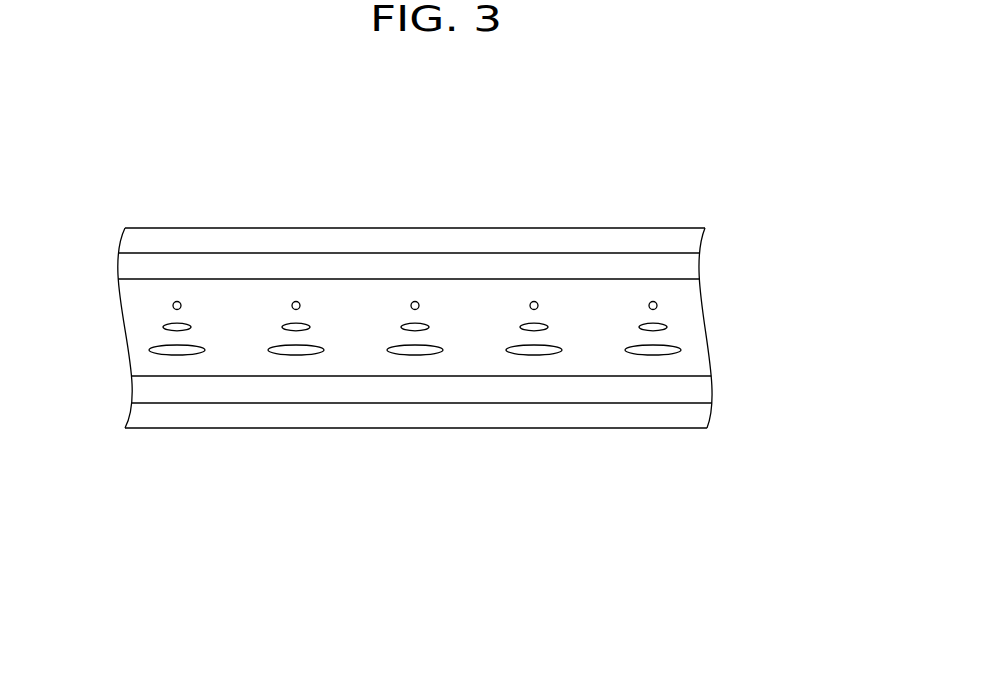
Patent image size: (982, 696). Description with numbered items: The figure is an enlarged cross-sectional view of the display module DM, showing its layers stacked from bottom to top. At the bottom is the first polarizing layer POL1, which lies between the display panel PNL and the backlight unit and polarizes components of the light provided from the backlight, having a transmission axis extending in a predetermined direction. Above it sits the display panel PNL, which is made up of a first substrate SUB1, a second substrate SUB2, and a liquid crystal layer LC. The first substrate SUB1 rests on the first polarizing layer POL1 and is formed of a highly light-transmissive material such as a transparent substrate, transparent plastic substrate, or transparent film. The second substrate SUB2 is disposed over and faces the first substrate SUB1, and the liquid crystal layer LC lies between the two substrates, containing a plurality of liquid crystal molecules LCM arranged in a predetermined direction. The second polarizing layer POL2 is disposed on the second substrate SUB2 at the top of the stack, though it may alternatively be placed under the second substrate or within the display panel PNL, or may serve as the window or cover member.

The display module DM is at (646, 184).
The display panel PNL is at (810, 257).
The second polarizing layer POL2 is at (697, 240).
The second substrate SUB2 is at (692, 265).
The liquid crystal layer LC is at (695, 319).
The liquid crystal molecules LCM is at (668, 350).
The first substrate SUB1 is at (702, 389).
The first polarizing layer POL1 is at (700, 414).